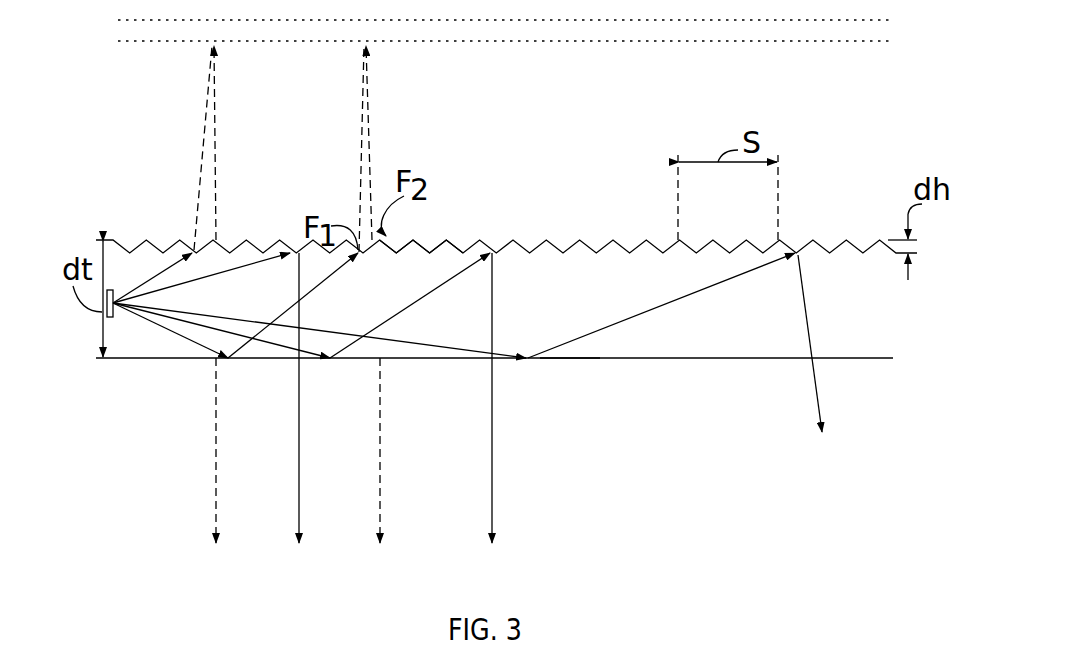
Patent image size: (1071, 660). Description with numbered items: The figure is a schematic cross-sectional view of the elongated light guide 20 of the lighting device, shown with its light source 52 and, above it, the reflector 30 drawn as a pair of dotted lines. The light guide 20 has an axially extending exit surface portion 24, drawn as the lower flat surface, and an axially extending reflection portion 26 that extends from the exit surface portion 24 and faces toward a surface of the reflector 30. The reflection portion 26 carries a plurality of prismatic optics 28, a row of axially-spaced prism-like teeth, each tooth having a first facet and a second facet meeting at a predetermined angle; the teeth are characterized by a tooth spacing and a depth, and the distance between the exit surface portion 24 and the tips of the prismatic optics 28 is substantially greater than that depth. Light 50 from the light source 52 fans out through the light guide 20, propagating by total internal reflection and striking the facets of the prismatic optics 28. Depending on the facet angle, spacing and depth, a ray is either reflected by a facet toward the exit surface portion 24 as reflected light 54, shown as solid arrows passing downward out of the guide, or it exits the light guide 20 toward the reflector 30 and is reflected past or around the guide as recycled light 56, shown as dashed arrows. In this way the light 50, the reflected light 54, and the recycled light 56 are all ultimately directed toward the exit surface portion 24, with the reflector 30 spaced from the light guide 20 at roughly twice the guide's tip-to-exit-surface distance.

The elongated light guide 20 is at (716, 364).
The exit surface portion 24 is at (565, 360).
The reflection portion 26 is at (482, 237).
The prismatic optics 28 is at (388, 273).
The reflector 30 is at (118, 28).
The light 50 is at (160, 276).
The light source 52 is at (109, 318).
The reflected light 54 is at (300, 478).
The recycled light 56 is at (185, 237).